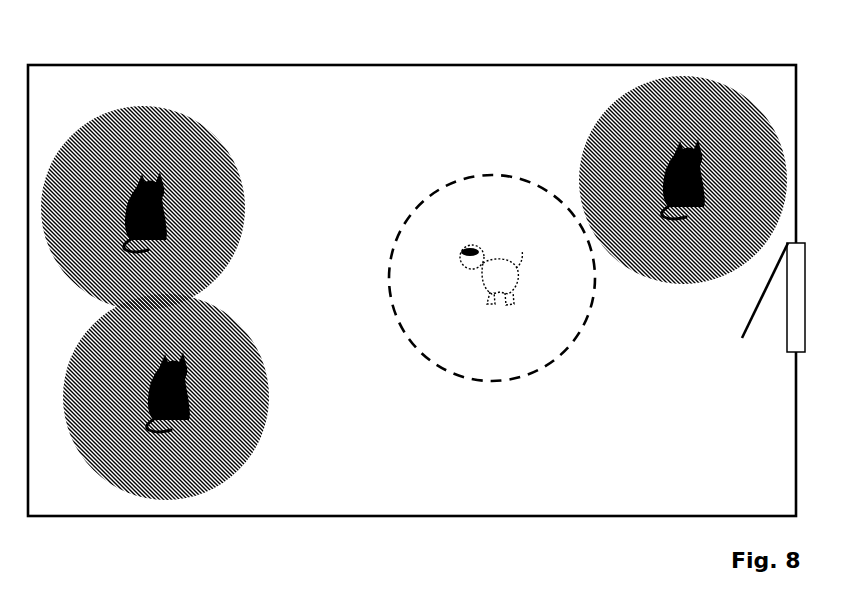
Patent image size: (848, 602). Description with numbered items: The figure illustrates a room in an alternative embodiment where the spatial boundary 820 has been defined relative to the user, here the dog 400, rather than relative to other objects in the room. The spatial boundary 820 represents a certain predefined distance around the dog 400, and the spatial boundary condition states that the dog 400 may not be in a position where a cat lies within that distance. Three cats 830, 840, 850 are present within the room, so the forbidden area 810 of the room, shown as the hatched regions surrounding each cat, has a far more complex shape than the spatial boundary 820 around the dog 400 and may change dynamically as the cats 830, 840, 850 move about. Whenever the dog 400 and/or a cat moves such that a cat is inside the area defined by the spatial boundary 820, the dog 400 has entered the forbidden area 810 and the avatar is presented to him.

The dog 400 is at (498, 314).
The forbidden area 810 is at (232, 344).
The spatial boundary 820 is at (494, 171).
The cat 830 is at (141, 166).
The cat 840 is at (178, 428).
The cat 850 is at (653, 171).